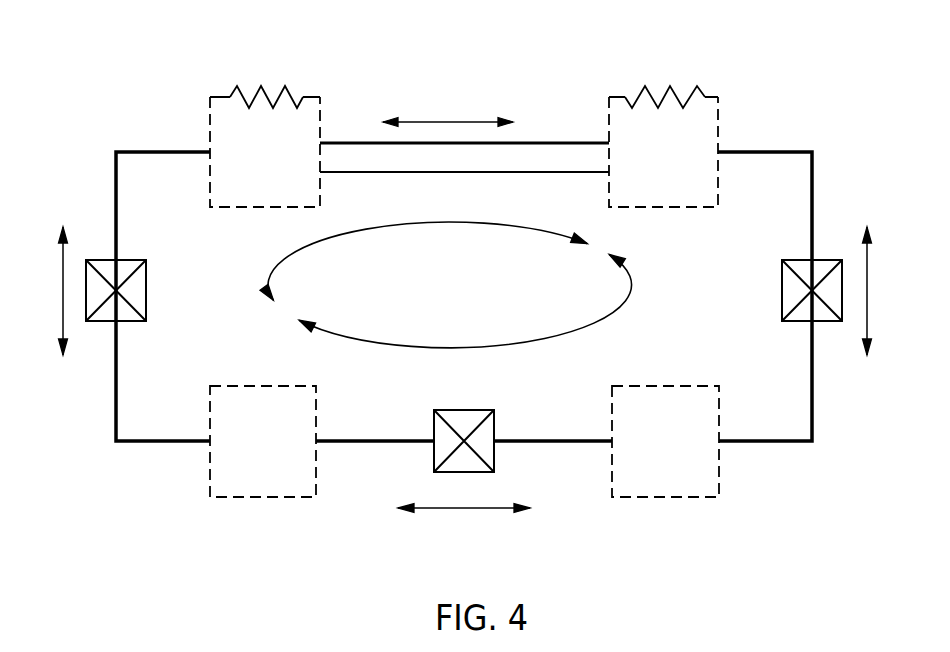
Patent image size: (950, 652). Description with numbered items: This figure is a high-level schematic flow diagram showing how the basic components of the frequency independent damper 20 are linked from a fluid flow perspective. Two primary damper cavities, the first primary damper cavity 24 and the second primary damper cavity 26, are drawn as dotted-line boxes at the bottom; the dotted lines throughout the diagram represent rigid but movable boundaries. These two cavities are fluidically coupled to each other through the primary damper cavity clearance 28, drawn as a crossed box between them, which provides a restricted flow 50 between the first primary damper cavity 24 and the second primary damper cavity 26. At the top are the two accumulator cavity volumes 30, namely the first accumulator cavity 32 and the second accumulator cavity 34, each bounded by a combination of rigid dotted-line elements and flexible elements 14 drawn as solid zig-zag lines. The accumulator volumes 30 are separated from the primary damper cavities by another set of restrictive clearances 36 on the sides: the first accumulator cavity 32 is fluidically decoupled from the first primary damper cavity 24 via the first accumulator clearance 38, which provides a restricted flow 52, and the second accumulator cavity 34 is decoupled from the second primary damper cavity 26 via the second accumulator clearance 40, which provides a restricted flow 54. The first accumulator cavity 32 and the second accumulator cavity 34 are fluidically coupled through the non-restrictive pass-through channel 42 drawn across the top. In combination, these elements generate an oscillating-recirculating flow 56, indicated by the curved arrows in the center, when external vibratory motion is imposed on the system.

The flexible elements 14 is at (238, 88).
The frequency independent damper 20 is at (464, 474).
The first primary damper cavity 24 is at (262, 498).
The second primary damper cavity 26 is at (667, 498).
The primary damper cavity clearance 28 is at (477, 410).
The accumulator cavity volumes 30 is at (468, 147).
The first accumulator cavity 32 is at (210, 118).
The second accumulator cavity 34 is at (718, 132).
The restrictive clearances 36 is at (464, 341).
The first accumulator clearance 38 is at (105, 323).
The second accumulator clearance 40 is at (823, 323).
The non-restrictive pass-through channel 42 is at (357, 157).
The restricted flow 50 is at (463, 510).
The restricted flow 52 is at (62, 279).
The restricted flow 54 is at (868, 290).
The oscillating-recirculating flow 56 is at (488, 223).